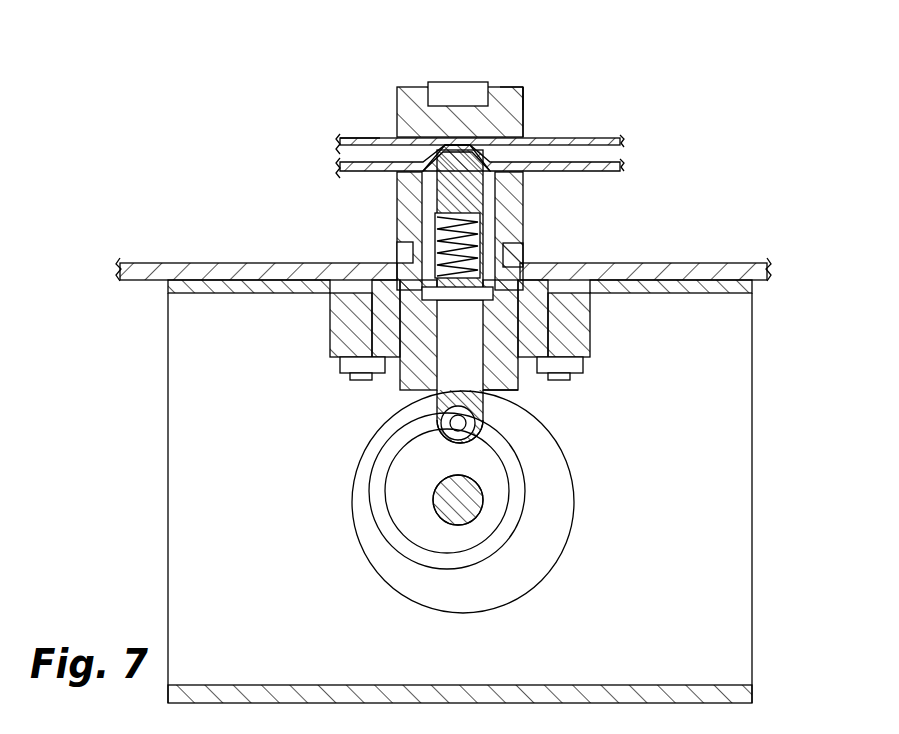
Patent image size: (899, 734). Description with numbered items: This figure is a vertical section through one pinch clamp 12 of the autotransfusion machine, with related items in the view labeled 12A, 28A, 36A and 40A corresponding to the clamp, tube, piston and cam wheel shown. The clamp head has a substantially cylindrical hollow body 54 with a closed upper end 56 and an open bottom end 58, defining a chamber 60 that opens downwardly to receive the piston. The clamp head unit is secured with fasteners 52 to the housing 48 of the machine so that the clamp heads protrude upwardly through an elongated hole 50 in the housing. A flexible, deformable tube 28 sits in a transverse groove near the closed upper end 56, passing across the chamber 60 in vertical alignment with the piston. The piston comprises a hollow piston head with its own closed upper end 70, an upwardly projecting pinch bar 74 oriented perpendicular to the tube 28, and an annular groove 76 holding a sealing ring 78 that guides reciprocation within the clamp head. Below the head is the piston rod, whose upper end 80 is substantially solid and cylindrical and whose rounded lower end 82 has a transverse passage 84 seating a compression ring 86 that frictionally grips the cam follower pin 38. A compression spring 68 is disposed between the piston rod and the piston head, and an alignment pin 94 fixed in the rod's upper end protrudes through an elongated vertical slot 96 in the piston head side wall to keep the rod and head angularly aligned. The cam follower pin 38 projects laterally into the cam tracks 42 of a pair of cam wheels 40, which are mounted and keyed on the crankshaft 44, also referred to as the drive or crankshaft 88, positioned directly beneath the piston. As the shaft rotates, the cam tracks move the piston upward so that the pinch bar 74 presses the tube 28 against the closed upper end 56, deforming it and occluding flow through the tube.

The pinch clamp 12 is at (543, 97).
The nut insert 12A is at (410, 105).
The deformable tube 28 is at (622, 137).
The upper panel portion 28A is at (343, 150).
The lower panel 36A is at (393, 178).
The cam follower pin 38 is at (487, 413).
The cam wheels 40 is at (525, 594).
The wheel inner rim 40A is at (378, 572).
The cam tracks 42 is at (503, 460).
The crankshaft 44 is at (475, 497).
The housing 48 is at (690, 263).
The elongated hole 50 is at (524, 262).
The fasteners 52 is at (340, 365).
The hollow body 54 is at (500, 87).
The closed upper end 56 is at (524, 88).
The open bottom end 58 is at (513, 393).
The chamber 60 is at (372, 338).
The compression spring 68 is at (488, 216).
The closed upper end 70 is at (440, 213).
The pinch bar 74 is at (470, 150).
The annular groove 76 is at (500, 186).
The sealing ring 78 is at (397, 181).
The upper end 80 is at (398, 262).
The rounded lower end 82 is at (460, 432).
The transverse passage 84 is at (447, 413).
The compression ring 86 is at (458, 443).
The drive or crankshaft 88 is at (472, 518).
The alignment pin 94 is at (430, 298).
The elongated vertical slot 96 is at (548, 300).